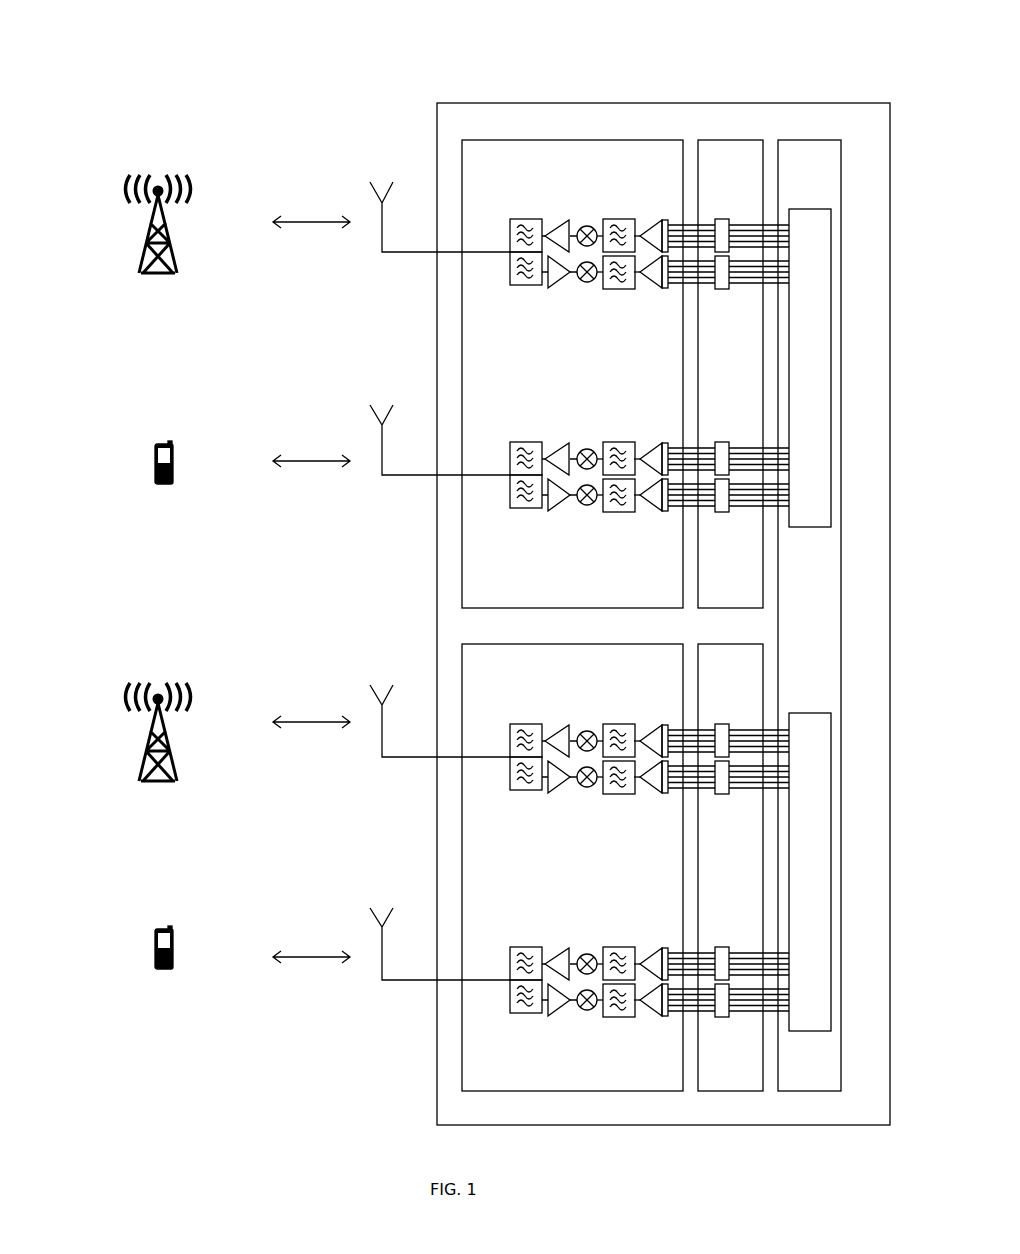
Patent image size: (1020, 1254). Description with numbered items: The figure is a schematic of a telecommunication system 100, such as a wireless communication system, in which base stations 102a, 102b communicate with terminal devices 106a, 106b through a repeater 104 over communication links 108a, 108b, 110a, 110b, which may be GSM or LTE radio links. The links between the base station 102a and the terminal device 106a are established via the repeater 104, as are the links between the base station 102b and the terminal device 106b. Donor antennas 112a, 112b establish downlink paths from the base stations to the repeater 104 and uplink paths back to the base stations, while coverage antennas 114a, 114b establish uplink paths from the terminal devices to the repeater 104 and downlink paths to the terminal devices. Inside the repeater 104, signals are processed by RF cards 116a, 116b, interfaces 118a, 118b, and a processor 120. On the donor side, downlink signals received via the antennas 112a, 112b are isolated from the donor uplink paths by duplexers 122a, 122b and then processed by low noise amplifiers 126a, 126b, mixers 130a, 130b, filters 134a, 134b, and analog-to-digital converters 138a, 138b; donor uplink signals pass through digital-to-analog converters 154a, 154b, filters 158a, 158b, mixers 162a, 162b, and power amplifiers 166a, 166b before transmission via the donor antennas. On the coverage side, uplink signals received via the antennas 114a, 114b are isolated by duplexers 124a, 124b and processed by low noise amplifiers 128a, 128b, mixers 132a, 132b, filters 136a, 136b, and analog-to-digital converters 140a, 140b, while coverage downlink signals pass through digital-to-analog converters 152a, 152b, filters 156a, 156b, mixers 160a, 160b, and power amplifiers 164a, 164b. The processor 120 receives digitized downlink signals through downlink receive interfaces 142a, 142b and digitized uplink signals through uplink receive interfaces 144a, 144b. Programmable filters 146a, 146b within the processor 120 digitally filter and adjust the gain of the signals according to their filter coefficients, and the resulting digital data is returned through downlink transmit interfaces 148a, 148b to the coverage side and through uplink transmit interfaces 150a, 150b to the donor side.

The telecommunication system 100 is at (687, 40).
The base station 102a is at (153, 286).
The base station 102b is at (153, 796).
The repeater 104 is at (637, 102).
The terminal device 106a is at (153, 496).
The terminal device 106b is at (153, 982).
The communication link 108a is at (312, 211).
The communication link 108b is at (312, 450).
The communication link 110a is at (312, 712).
The communication link 110b is at (312, 946).
The donor antenna 112a is at (395, 192).
The donor antenna 112b is at (393, 686).
The coverage antenna 114a is at (397, 412).
The coverage antenna 114b is at (403, 915).
The RF card 116a is at (551, 137).
The RF card 116b is at (551, 642).
The interface 118a is at (720, 137).
The interface 118b is at (720, 642).
The processor 120 is at (849, 612).
The duplexer 122a is at (519, 286).
The duplexer 122b is at (504, 770).
The duplexer 124a is at (504, 488).
The duplexer 124b is at (504, 993).
The low noise amplifier 126a is at (554, 289).
The low noise amplifier 126b is at (541, 796).
The low noise amplifier 128a is at (541, 514).
The low noise amplifier 128b is at (541, 1019).
The mixer 130a is at (588, 291).
The mixer 130b is at (564, 816).
The mixer 132a is at (564, 528).
The mixer 132b is at (564, 1033).
The filter 134a is at (614, 290).
The filter 134b is at (616, 803).
The filter 136a is at (616, 521).
The filter 136b is at (616, 1026).
The analog-to-digital converter 138a is at (651, 290).
The analog-to-digital converter 138b is at (714, 807).
The analog-to-digital converter 140a is at (714, 525).
The analog-to-digital converter 140b is at (714, 1030).
The downlink receive interface 142a is at (723, 290).
The downlink receive interface 142b is at (731, 796).
The uplink receive interface 144a is at (731, 514).
The uplink receive interface 144b is at (731, 1019).
The programmable filter 146a is at (799, 209).
The programmable filter 146b is at (799, 713).
The downlink transmit interface 148a is at (732, 443).
The downlink transmit interface 148b is at (732, 948).
The uplink transmit interface 150a is at (721, 219).
The uplink transmit interface 150b is at (732, 725).
The digital-to-analog converter 152a is at (714, 444).
The digital-to-analog converter 152b is at (714, 949).
The digital-to-analog converter 154a is at (654, 222).
The digital-to-analog converter 154b is at (714, 726).
The filter 156a is at (617, 443).
The filter 156b is at (617, 948).
The filter 158a is at (622, 219).
The filter 158b is at (617, 725).
The mixer 160a is at (580, 432).
The mixer 160b is at (580, 937).
The mixer 162a is at (581, 227).
The mixer 162b is at (580, 714).
The power amplifier 164a is at (541, 444).
The power amplifier 164b is at (541, 949).
The power amplifier 166a is at (560, 219).
The power amplifier 166b is at (541, 726).